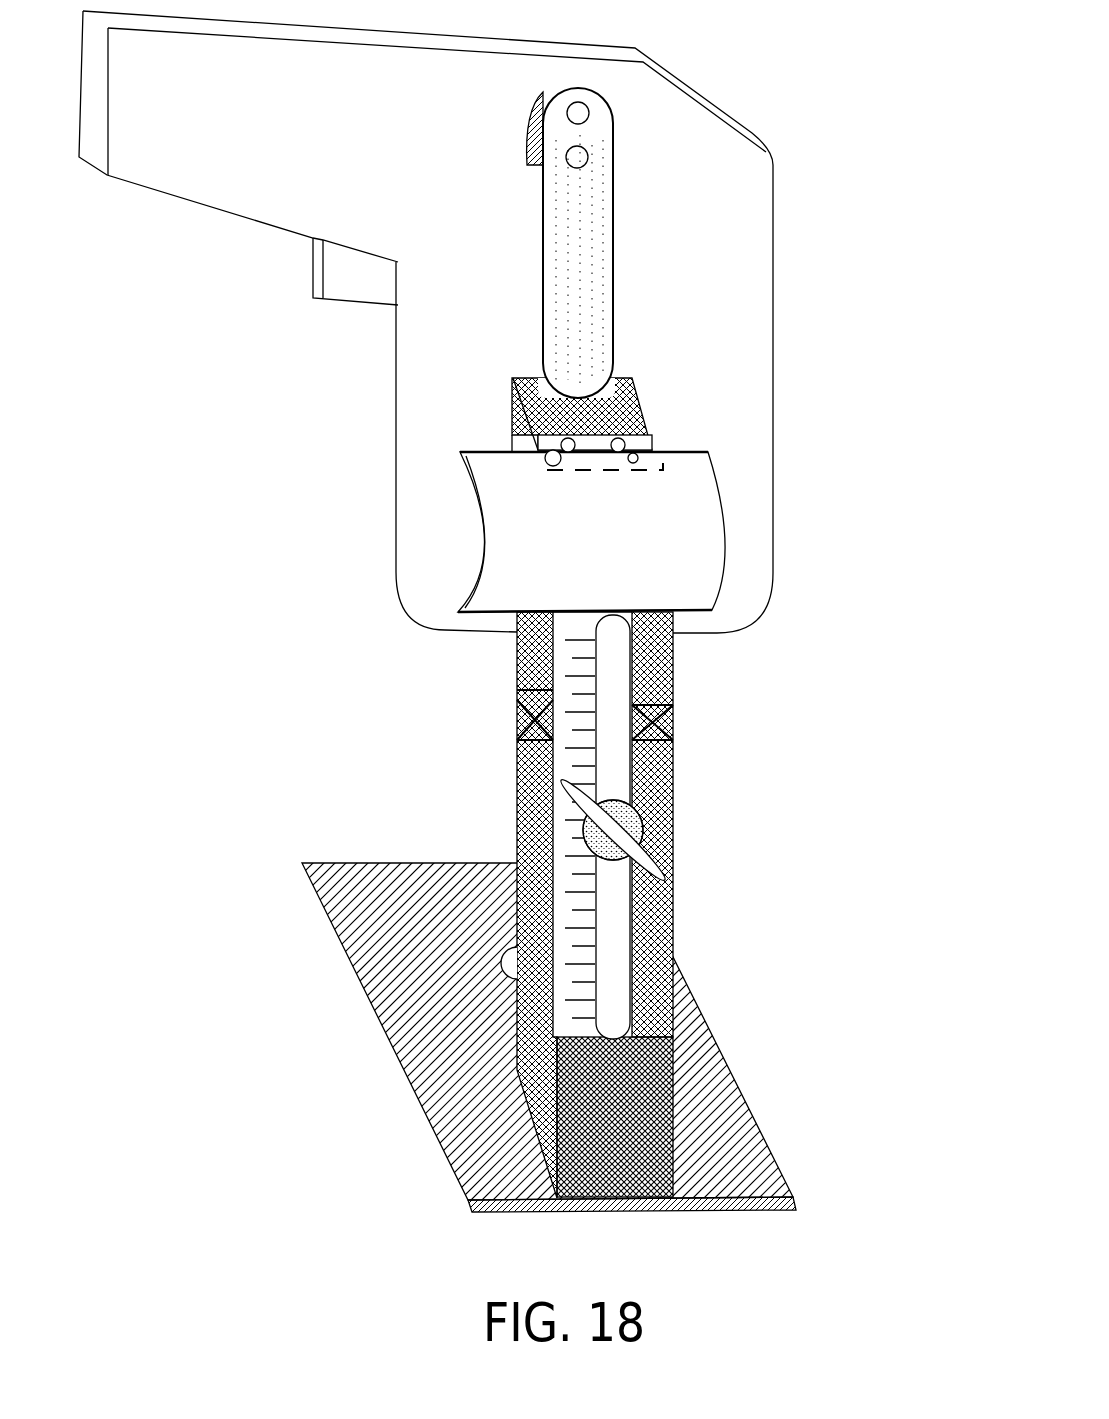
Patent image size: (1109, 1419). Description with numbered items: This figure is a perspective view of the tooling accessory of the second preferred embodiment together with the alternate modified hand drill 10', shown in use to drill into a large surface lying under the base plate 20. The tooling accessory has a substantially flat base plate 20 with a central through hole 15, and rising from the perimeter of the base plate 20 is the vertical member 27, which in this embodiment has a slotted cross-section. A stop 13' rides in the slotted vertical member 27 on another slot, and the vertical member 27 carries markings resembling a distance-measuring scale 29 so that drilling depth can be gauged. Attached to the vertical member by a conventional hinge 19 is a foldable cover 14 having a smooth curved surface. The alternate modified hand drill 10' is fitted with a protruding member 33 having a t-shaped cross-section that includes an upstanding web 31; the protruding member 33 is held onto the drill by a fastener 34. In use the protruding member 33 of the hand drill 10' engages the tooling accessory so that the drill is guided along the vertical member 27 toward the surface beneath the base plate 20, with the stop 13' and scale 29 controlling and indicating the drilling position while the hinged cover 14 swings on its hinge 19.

The alternate modified hand drill 10' is at (426, 322).
The stop 13' is at (494, 830).
The foldable cover 14 is at (460, 533).
The central through hole 15 is at (480, 968).
The hinge 19 is at (520, 463).
The base plate 20 is at (300, 861).
The vertical member 27 is at (512, 397).
The distance-measuring scale 29 is at (548, 686).
The upstanding web 31 is at (538, 164).
The protruding member 33 is at (533, 306).
The fastener 34 is at (570, 108).